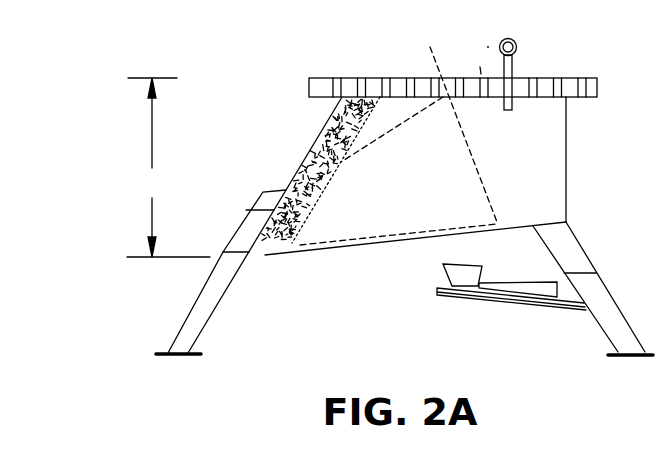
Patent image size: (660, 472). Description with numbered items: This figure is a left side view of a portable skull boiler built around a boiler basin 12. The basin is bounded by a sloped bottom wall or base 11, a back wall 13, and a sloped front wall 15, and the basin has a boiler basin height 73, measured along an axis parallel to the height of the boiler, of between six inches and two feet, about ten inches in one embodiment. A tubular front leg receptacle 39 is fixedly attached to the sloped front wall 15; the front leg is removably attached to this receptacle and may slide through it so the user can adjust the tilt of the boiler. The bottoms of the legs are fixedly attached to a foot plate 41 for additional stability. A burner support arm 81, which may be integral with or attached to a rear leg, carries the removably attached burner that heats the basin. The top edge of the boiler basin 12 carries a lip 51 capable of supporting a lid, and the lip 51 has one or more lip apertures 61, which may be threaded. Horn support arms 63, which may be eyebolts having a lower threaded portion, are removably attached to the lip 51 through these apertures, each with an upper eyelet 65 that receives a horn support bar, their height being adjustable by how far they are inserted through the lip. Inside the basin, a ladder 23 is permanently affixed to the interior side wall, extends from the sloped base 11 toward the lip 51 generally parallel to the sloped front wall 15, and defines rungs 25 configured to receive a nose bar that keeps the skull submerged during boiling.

The sloped bottom wall or base 11 is at (398, 244).
The boiler basin 12 is at (602, 134).
The back wall 13 is at (567, 198).
The sloped front wall 15 is at (288, 185).
The ladder 23 is at (286, 235).
The rungs 25 is at (327, 152).
The tubular front leg receptacle 39 is at (233, 237).
The foot plate 41 is at (180, 357).
The lip 51 is at (297, 78).
The lip apertures 61 is at (411, 77).
The horn support arms 63 is at (503, 72).
The eyelet 65 is at (517, 46).
The boiler basin height 73 is at (168, 167).
The burner support arm 81 is at (512, 300).